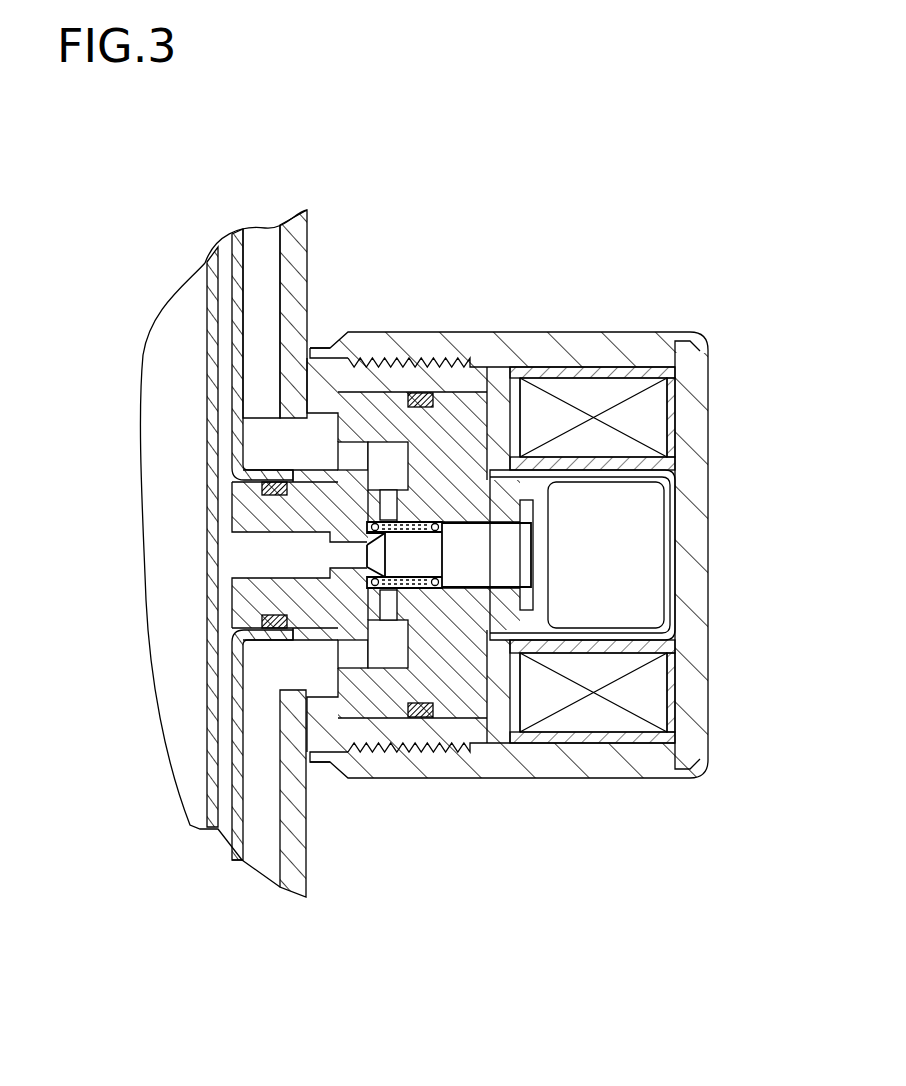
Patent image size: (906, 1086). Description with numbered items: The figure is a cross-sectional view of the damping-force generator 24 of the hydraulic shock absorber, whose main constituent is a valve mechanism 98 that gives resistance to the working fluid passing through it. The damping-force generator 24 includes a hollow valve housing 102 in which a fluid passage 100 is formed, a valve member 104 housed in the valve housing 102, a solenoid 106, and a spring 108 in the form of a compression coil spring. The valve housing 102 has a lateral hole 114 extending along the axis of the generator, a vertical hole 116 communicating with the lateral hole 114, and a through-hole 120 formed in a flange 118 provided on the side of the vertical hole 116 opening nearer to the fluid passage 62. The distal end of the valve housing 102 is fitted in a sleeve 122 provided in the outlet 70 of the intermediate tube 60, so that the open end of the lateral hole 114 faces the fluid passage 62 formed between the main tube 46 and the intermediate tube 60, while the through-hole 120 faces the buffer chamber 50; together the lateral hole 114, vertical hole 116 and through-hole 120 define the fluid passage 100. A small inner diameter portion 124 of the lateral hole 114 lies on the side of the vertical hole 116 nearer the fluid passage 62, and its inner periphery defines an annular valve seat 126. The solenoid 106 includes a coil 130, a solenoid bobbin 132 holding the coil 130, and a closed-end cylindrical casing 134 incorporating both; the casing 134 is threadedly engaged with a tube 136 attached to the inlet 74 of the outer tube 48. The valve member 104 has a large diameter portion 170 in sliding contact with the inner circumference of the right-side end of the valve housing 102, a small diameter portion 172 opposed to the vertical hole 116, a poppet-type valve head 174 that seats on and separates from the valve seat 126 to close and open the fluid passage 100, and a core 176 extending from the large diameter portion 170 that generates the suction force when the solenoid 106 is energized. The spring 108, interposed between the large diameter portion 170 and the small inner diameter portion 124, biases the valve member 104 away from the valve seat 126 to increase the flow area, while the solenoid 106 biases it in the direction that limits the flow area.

The damping-force generator 24 is at (423, 493).
The main tube 46 is at (207, 283).
The outer tube 48 is at (307, 870).
The buffer chamber 50 is at (260, 245).
The intermediate tube 60 is at (235, 315).
The fluid passage 62 is at (227, 657).
The outlet 70 is at (233, 497).
The inlet 74 is at (293, 427).
The valve mechanism 98 is at (336, 622).
The fluid passage 100 is at (250, 545).
The valve housing 102 is at (318, 632).
The valve member 104 is at (670, 510).
The solenoid 106 is at (663, 328).
The spring 108 is at (430, 625).
The lateral hole 114 is at (285, 567).
The vertical hole 116 is at (343, 505).
The flange 118 is at (358, 400).
The through-hole 120 is at (348, 455).
The sleeve 122 is at (280, 463).
The small inner diameter portion 124 is at (347, 552).
The valve seat 126 is at (358, 573).
The coil 130 is at (606, 720).
The solenoid bobbin 132 is at (565, 735).
The casing 134 is at (655, 765).
The tube 136 is at (335, 735).
The large diameter portion 170 is at (485, 545).
The small diameter portion 172 is at (427, 550).
The valve head 174 is at (395, 525).
The core 176 is at (650, 572).